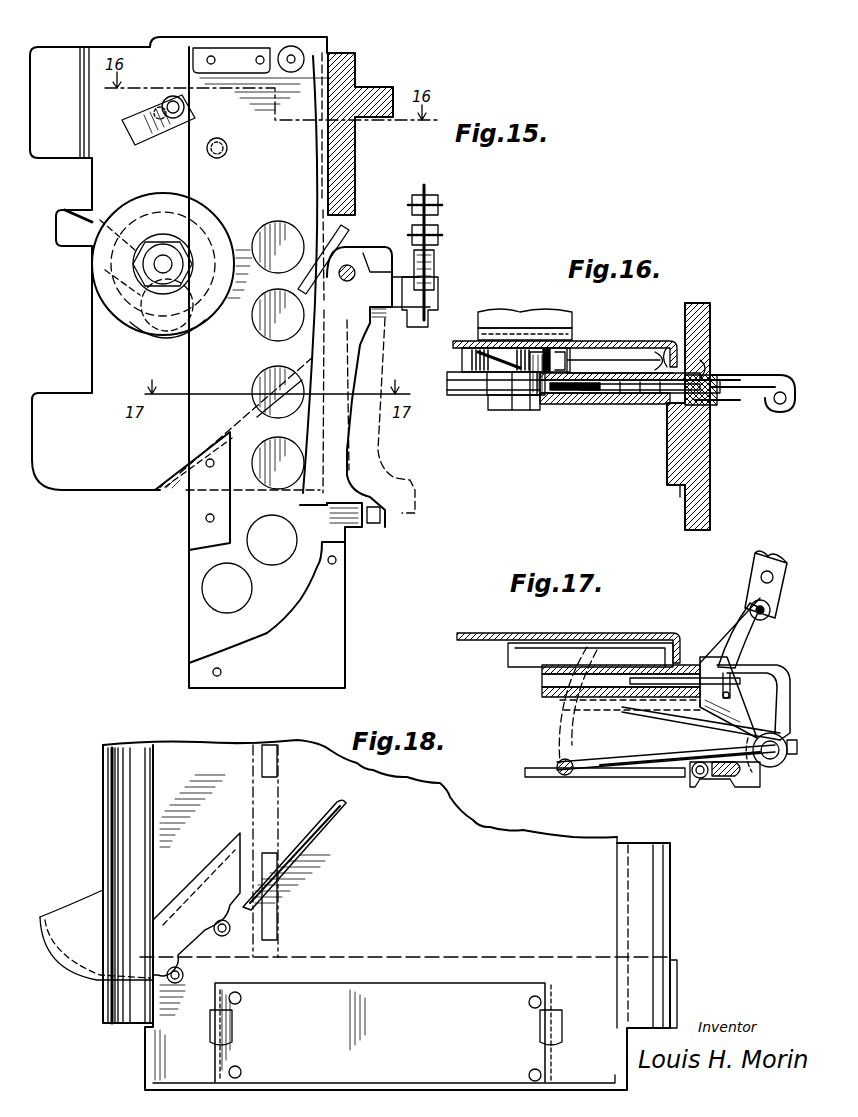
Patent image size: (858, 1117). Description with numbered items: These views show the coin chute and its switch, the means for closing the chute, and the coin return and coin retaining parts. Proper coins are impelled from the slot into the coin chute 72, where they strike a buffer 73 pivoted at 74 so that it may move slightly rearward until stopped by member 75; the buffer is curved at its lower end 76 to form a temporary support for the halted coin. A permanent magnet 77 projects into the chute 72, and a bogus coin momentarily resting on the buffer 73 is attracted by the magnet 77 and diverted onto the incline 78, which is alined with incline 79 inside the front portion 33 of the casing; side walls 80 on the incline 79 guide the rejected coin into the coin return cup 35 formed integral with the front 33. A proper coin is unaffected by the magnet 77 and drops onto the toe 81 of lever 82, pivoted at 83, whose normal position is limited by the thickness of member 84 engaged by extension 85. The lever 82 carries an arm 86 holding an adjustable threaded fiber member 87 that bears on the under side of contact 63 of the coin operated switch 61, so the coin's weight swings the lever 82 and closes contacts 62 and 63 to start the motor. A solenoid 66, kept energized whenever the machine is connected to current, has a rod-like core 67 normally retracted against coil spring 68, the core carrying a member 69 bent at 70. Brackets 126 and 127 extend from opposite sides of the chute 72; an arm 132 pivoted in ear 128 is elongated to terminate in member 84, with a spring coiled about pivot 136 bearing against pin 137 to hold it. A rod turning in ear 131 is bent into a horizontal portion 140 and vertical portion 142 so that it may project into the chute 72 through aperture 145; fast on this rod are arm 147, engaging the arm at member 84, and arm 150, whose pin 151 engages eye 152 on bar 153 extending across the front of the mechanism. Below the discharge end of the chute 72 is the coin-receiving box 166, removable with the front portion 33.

In FIG. 18, the removable front portion 33 is at (145, 1057).
In FIG. 18, the coin return cup 35 is at (48, 912).
In FIG. 15, the coin operated switch 61 is at (428, 195).
In FIG. 15, the contact point 62 is at (440, 206).
In FIG. 15, the contact point 63 is at (440, 238).
In FIG. 16, the solenoid 66 is at (535, 310).
In FIG. 15, the core member 67 is at (175, 96).
In FIG. 16, the core member 67 is at (540, 398).
In FIG. 16, the coil spring 68 is at (580, 342).
In FIG. 15, the member 69 is at (150, 112).
In FIG. 16, the member 69 is at (512, 412).
In FIG. 15, the bent portion 70 is at (148, 140).
In FIG. 16, the bent portion 70 is at (490, 385).
In FIG. 15, the coin chute 72 is at (190, 565).
In FIG. 16, the coin chute 72 is at (600, 408).
In FIG. 17, the coin chute 72 is at (548, 698).
In FIG. 15, the buffer 73 is at (312, 160).
In FIG. 16, the buffer 73 is at (672, 408).
In FIG. 15, the pivot 74 is at (293, 50).
In FIG. 15, the stop member 75 is at (340, 196).
In FIG. 16, the stop member 75 is at (712, 408).
In FIG. 15, the curved lower end 76 is at (300, 272).
In FIG. 16, the curved lower end 76 is at (635, 408).
In FIG. 15, the permanent magnet 77 is at (195, 240).
In FIG. 16, the permanent magnet 77 is at (465, 390).
In FIG. 15, the incline 78 is at (205, 455).
In FIG. 17, the incline 78 is at (545, 680).
In FIG. 18, the incline 79 is at (308, 820).
In FIG. 18, the side walls 80 is at (200, 880).
In FIG. 15, the toe 81 is at (278, 500).
In FIG. 17, the toe 81 is at (610, 690).
In FIG. 15, the lever 82 is at (360, 367).
In FIG. 17, the lever 82 is at (665, 665).
In FIG. 15, the pivot 83 is at (352, 266).
In FIG. 16, the pivot 83 is at (712, 358).
In FIG. 15, the member 84 is at (357, 530).
In FIG. 17, the member 84 is at (735, 712).
In FIG. 15, the extension 85 is at (381, 518).
In FIG. 17, the extension 85 is at (753, 702).
In FIG. 15, the arm 86 is at (440, 292).
In FIG. 16, the arm 86 is at (766, 376).
In FIG. 15, the threaded member 87 is at (438, 262).
In FIG. 16, the threaded member 87 is at (779, 405).
In FIG. 17, the bracket 126 is at (662, 632).
In FIG. 17, the bracket 127 is at (620, 712).
In FIG. 17, the ear 128 is at (708, 618).
In FIG. 17, the ear 131 is at (672, 725).
In FIG. 17, the arm 132 is at (763, 552).
In FIG. 17, the pivot 136 is at (765, 620).
In FIG. 17, the pin 137 is at (760, 576).
In FIG. 17, the horizontal portion 140 is at (645, 768).
In FIG. 17, the vertical portion 142 is at (560, 760).
In FIG. 15, the aperture 145 is at (217, 138).
In FIG. 17, the arm 147 is at (770, 712).
In FIG. 17, the arm 150 is at (772, 770).
In FIG. 17, the pin 151 is at (695, 788).
In FIG. 17, the eye 152 is at (722, 778).
In FIG. 17, the bar 153 is at (543, 778).
In FIG. 18, the coin-receiving box 166 is at (412, 990).